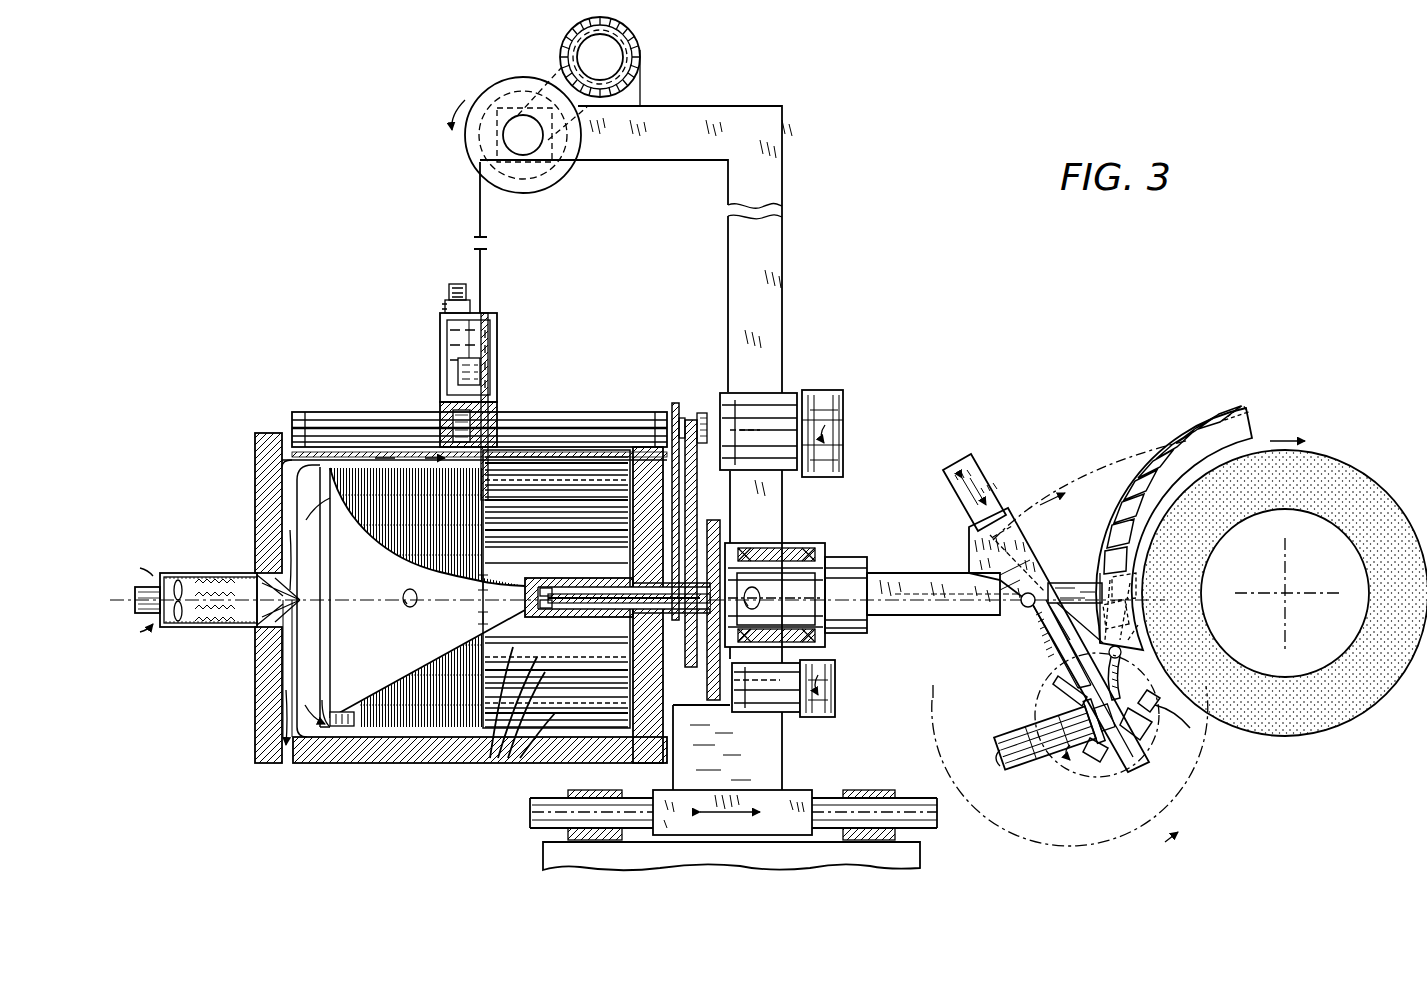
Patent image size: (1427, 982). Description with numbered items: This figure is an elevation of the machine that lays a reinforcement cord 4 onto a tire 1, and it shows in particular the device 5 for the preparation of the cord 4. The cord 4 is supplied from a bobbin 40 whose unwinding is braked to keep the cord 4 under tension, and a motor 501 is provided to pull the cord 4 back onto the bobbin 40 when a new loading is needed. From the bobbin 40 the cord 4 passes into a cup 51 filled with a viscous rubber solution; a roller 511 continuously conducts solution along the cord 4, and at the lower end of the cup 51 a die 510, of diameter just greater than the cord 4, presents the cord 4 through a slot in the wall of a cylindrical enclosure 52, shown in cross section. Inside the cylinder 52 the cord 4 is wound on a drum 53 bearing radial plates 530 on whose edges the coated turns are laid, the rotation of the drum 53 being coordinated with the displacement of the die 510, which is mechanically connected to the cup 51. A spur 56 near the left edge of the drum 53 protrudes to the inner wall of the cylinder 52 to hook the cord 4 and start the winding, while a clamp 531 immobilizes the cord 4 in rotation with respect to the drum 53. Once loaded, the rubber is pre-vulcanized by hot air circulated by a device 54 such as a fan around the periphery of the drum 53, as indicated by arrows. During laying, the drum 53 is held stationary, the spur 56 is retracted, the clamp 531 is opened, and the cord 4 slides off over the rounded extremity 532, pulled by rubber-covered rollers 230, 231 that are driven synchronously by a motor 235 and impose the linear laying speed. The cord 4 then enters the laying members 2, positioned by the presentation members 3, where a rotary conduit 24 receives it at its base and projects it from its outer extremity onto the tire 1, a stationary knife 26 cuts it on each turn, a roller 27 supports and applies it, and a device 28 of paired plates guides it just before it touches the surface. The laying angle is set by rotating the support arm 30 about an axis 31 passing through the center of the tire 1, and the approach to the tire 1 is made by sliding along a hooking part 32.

The tire 1 is at (1370, 463).
The laying members 2 is at (1077, 437).
The presentation members 3 is at (930, 446).
The reinforcement cord 4 is at (480, 251).
The device for the preparation of the cord 5 is at (412, 153).
The rotary conduit 24 is at (1142, 727).
The stationary knife 26 is at (1160, 700).
The roller 27 is at (1133, 673).
The device for receiving the reinforcement cord 28 is at (1244, 407).
The support arm 30 is at (858, 565).
The axis 31 is at (794, 588).
The hooking part 32 is at (906, 860).
The bobbin 40 is at (513, 80).
The cup 51 is at (440, 338).
The cylindrical enclosure 52 is at (240, 507).
The drum 53 is at (470, 735).
The device for placing air in circulation 54 is at (186, 630).
The spur 56 is at (341, 728).
The roller 230 is at (1058, 683).
The roller 231 is at (1110, 770).
The motor 235 is at (1022, 760).
The motor 501 is at (638, 50).
The die 510 is at (486, 575).
The roller 511 is at (458, 371).
The radial plates 530 is at (512, 729).
The clamp 531 is at (592, 563).
The rounded extremity 532 is at (320, 727).